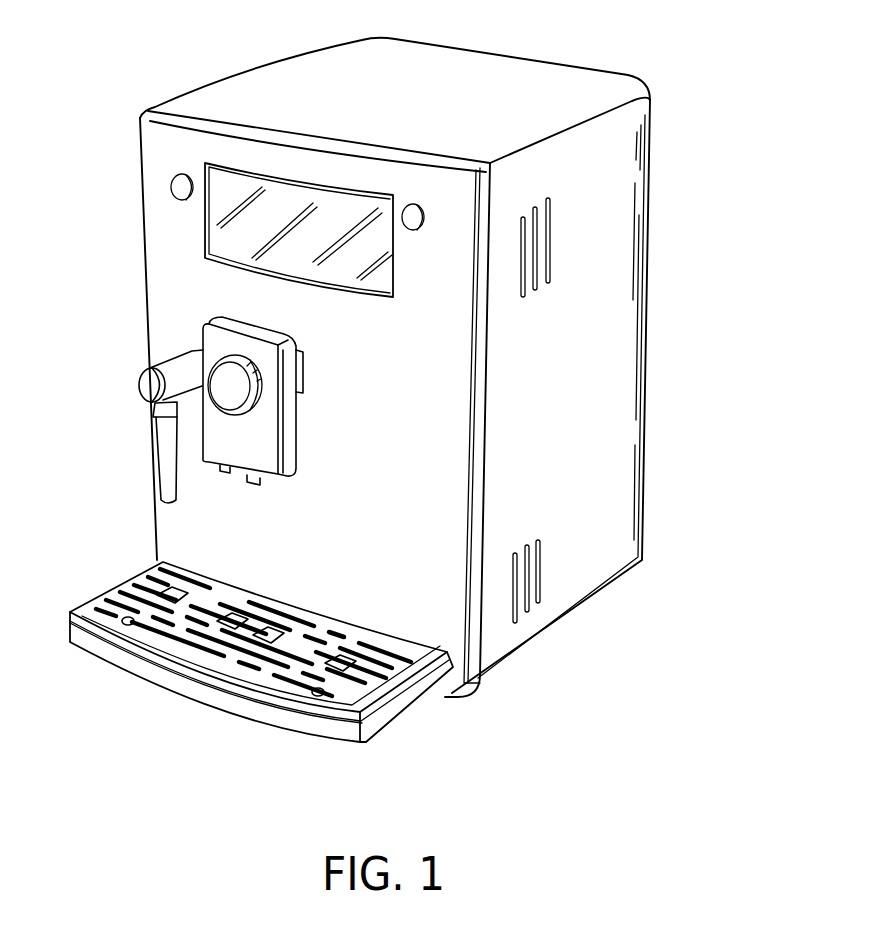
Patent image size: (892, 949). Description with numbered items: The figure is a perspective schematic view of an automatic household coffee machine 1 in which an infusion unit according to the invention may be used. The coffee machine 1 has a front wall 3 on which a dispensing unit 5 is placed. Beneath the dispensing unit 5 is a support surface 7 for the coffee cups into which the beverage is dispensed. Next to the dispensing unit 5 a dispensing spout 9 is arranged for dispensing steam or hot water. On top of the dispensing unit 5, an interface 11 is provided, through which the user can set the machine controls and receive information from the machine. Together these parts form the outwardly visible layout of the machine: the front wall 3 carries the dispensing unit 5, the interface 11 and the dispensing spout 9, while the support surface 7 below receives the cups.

The coffee machine 1 is at (404, 372).
The front wall 3 is at (440, 470).
The dispensing unit 5 is at (268, 415).
The support surface 7 is at (118, 600).
The dispensing spout 9 is at (167, 453).
The interface 11 is at (230, 238).